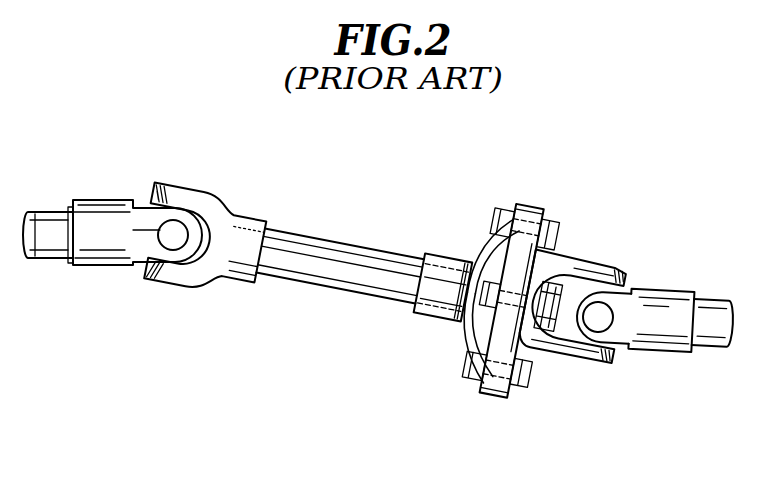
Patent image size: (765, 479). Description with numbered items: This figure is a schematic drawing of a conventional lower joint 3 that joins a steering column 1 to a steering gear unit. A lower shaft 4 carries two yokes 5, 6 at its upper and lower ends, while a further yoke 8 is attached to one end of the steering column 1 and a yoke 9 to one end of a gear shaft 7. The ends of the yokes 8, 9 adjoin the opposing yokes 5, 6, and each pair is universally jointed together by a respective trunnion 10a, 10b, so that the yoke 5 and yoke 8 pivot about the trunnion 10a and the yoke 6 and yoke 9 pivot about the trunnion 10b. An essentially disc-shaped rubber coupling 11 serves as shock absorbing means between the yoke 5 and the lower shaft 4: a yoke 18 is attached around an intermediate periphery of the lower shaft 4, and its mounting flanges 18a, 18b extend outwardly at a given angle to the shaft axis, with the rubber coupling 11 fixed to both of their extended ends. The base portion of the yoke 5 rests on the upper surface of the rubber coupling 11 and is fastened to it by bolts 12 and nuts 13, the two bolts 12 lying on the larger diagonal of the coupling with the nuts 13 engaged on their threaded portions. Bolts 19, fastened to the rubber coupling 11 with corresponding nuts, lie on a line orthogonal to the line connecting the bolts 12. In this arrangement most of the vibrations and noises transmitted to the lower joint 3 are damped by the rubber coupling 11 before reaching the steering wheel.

The steering column 1 is at (718, 346).
The lower joint 3 is at (340, 237).
The lower shaft 4 is at (343, 283).
The yoke 5 is at (571, 260).
The yoke 6 is at (236, 214).
The gear shaft 7 is at (58, 236).
The yoke 8 is at (665, 338).
The yoke 9 is at (115, 255).
The trunnion 10a is at (607, 320).
The trunnion 10b is at (174, 224).
The rubber coupling 11 is at (530, 205).
The bolts 12 is at (500, 210).
The nuts 13 is at (557, 224).
The yoke 18 is at (436, 300).
The mounting flange 18a is at (490, 258).
The mounting flange 18b is at (473, 338).
The bolts 19 is at (563, 330).